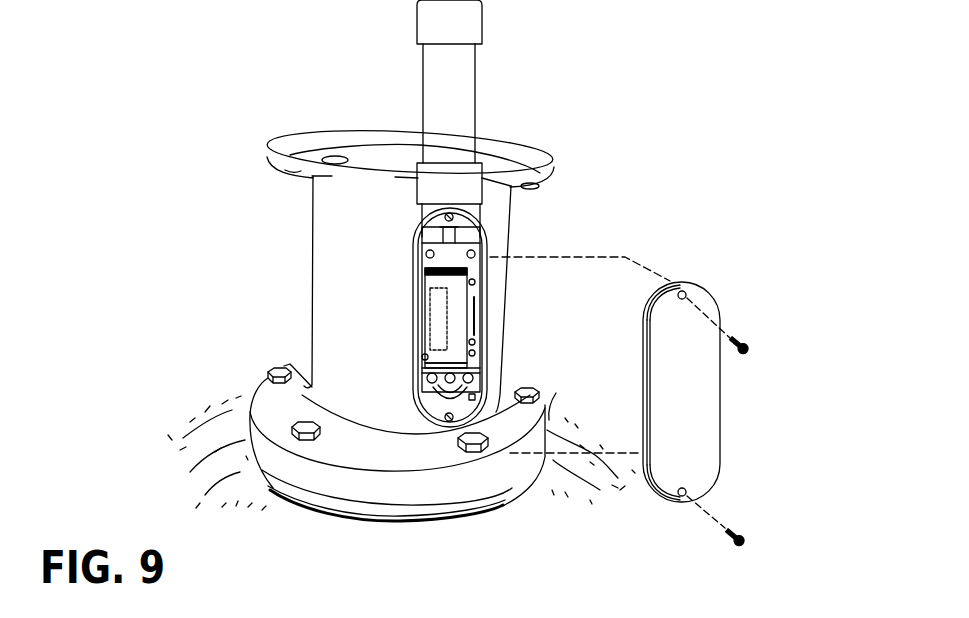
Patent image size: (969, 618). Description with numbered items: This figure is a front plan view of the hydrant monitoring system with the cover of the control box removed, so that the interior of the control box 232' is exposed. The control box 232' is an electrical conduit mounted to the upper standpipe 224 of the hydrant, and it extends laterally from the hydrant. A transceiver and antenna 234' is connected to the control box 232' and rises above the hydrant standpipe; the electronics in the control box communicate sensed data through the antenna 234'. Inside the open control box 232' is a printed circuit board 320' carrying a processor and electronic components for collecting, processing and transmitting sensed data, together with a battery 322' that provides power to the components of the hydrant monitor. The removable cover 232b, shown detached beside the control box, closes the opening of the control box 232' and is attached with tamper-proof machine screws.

The antenna 234' is at (491, 118).
The upper standpipe 224 is at (508, 227).
The control box 232' is at (501, 317).
The printed circuit board 320' is at (521, 313).
The battery 322' is at (417, 422).
The cover 232b is at (703, 429).